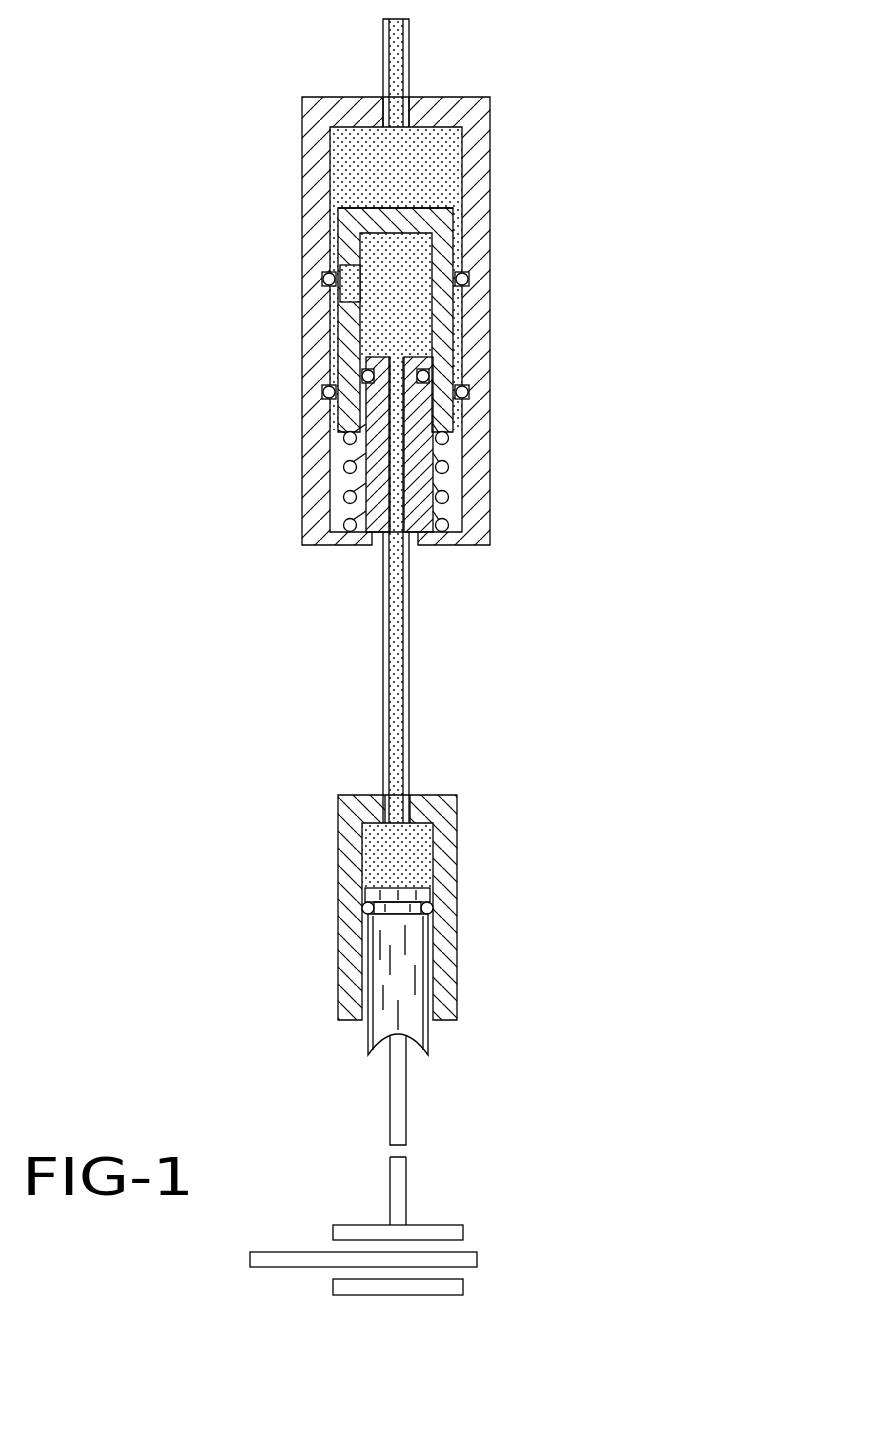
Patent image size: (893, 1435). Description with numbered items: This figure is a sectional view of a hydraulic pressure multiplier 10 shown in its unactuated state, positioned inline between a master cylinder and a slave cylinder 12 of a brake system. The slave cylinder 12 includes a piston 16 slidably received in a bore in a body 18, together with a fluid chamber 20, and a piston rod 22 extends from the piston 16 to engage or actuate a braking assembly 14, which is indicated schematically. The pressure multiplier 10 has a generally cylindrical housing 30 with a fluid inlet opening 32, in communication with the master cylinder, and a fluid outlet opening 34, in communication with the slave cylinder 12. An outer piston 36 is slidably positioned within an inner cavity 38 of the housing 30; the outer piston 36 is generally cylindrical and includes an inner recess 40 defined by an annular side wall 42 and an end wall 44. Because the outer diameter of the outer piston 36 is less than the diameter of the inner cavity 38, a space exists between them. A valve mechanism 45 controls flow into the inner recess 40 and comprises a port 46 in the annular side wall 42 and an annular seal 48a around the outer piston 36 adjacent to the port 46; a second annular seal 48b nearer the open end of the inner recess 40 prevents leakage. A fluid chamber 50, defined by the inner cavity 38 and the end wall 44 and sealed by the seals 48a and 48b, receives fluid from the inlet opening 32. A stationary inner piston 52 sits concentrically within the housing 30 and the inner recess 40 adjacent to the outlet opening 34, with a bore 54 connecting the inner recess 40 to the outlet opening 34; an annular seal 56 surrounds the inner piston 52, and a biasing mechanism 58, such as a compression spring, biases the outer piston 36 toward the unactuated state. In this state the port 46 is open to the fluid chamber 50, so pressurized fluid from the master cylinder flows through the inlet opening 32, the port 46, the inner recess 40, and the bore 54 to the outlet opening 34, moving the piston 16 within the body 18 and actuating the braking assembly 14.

The hydraulic pressure multiplier 10 is at (148, 100).
The slave cylinder 12 is at (460, 860).
The braking assembly 14 is at (490, 1232).
The piston 16 is at (418, 1022).
The body 18 is at (350, 963).
The fluid chamber 20 is at (388, 857).
The piston rod 22 is at (390, 1120).
The housing 30 is at (478, 480).
The fluid inlet opening 32 is at (405, 90).
The fluid outlet opening 34 is at (420, 555).
The outer piston 36 is at (388, 303).
The inner cavity 38 is at (355, 150).
The inner recess 40 is at (382, 315).
The annular side wall 42 is at (442, 413).
The end wall 44 is at (380, 215).
The valve mechanism 45 is at (300, 245).
The port 46 is at (335, 296).
The annular seal 48a is at (462, 279).
The second annular seal 48b is at (462, 392).
The fluid chamber 50 is at (425, 160).
The inner piston 52 is at (373, 458).
The bore 54 is at (385, 493).
The annular seal 56 is at (425, 375).
The biasing mechanism 58 is at (440, 495).